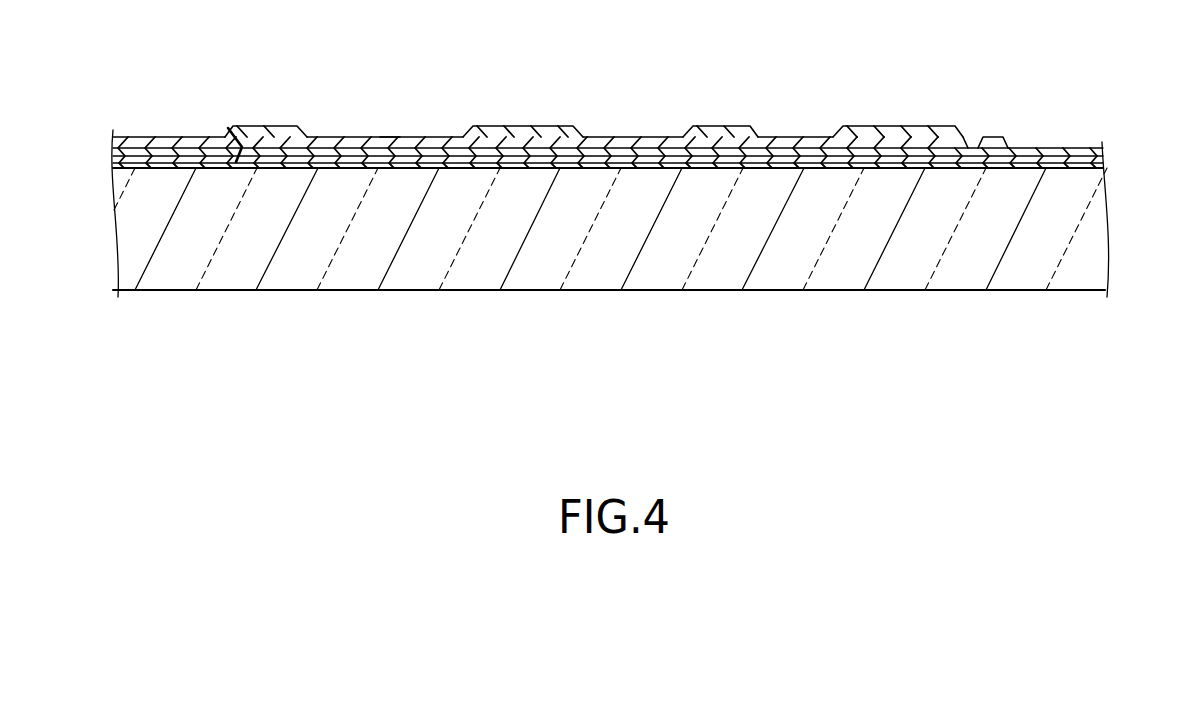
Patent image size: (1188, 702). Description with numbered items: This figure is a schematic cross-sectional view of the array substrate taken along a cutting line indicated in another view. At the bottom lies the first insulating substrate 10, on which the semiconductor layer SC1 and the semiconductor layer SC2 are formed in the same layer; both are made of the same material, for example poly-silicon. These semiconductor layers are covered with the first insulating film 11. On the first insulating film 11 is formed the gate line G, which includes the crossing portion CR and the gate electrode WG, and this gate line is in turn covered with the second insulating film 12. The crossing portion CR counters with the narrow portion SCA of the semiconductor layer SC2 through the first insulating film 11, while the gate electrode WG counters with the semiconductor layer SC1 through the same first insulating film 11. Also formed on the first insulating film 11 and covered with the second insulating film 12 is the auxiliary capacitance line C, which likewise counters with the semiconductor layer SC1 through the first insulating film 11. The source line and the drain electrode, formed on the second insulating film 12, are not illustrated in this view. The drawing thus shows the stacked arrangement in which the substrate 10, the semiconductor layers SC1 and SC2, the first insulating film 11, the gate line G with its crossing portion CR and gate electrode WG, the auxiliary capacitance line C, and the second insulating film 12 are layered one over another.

The first insulating substrate 10 is at (1108, 265).
The first insulating film 11 is at (1105, 163).
The second insulating film 12 is at (1103, 148).
The crossing portion CR is at (245, 136).
The gate line G is at (388, 137).
The gate electrode WG is at (547, 127).
The auxiliary capacitance line C is at (905, 127).
The narrow portion SCA is at (270, 167).
The semiconductor layer SC2 is at (258, 270).
The semiconductor layer SC1 is at (694, 168).